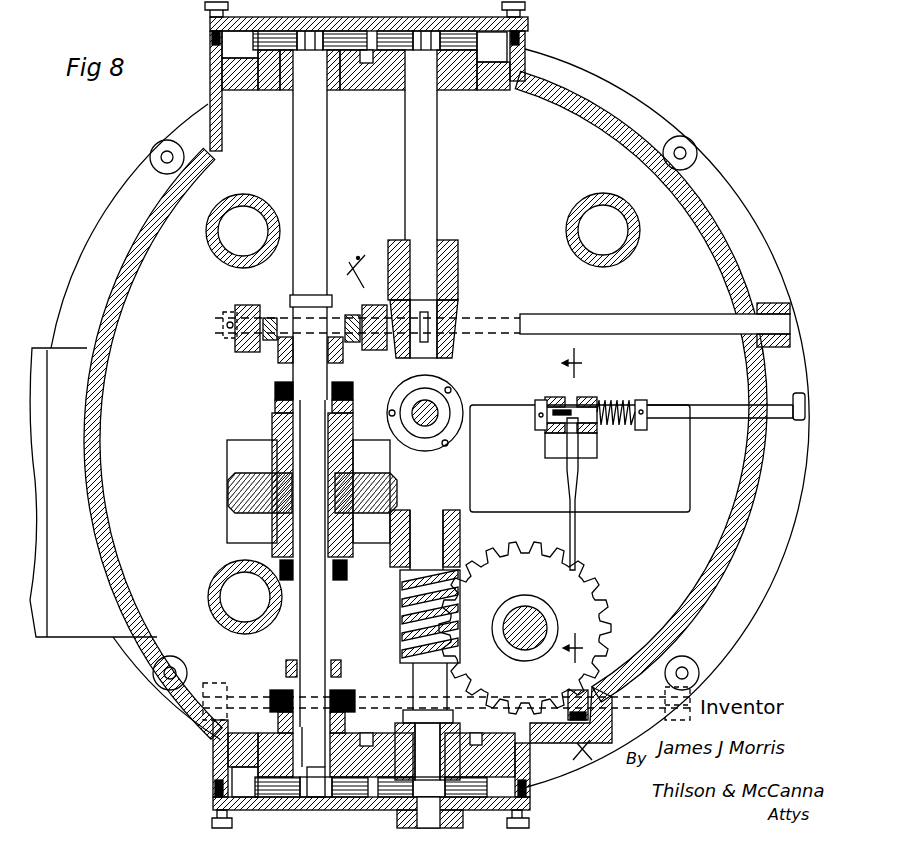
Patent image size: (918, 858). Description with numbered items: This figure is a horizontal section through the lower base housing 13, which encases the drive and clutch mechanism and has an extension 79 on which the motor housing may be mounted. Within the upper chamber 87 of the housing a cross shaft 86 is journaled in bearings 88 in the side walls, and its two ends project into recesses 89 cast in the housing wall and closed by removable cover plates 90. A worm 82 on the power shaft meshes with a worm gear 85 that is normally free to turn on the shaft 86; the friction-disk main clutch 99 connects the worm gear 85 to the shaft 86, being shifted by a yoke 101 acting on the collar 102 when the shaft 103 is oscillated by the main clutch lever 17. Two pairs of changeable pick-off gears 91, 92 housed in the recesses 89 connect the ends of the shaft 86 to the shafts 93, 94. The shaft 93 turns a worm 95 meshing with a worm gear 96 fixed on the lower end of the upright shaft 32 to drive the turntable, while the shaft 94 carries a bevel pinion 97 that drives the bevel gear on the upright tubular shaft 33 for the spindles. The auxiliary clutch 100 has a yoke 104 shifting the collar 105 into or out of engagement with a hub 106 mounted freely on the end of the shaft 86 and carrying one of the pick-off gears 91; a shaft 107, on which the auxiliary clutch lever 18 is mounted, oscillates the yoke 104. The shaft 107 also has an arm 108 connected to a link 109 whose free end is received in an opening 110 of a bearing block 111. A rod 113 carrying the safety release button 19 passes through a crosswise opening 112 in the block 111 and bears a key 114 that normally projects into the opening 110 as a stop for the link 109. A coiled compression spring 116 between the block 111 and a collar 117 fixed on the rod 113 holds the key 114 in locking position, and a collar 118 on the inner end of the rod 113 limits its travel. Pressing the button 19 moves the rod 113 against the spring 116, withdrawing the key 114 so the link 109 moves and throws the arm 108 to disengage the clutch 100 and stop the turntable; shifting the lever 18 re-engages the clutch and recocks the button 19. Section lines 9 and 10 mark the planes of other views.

The section line 9- 9 is at (475, 507).
The section line 10- 10 is at (579, 504).
The lower base housing 13 is at (721, 247).
The main clutch lever 17 is at (789, 312).
The auxiliary clutch lever 18 is at (674, 718).
The safety release button 19 is at (805, 400).
The upright shaft 32 is at (536, 612).
The upright tubular shaft 33 is at (426, 426).
The extension of the lower base housing 79 is at (88, 636).
The worm 82 is at (262, 460).
The worm gear 85 is at (245, 497).
The shaft 86 is at (328, 208).
The upper chamber 87 is at (597, 143).
The bearings 88 is at (292, 88).
The recesses 89 is at (238, 57).
The removable cover plates 90 is at (455, 30).
The pick-off gears 91 is at (345, 806).
The pick-off gears 92 is at (380, 30).
The shaft 93 is at (460, 733).
The shaft 94 is at (437, 157).
The worm 95 is at (400, 623).
The worm gear 96 is at (590, 574).
The bevel pinion 97 is at (455, 345).
The main clutch 99 is at (354, 391).
The auxiliary clutch 100 is at (285, 692).
The yoke 101 is at (278, 300).
The collar 102 is at (280, 352).
The shaft 103 is at (600, 323).
The yoke 104 is at (348, 690).
The collar 105 is at (286, 717).
The hub 106 is at (347, 726).
The shaft 107 is at (365, 700).
The arm 108 is at (586, 690).
The link 109 is at (583, 531).
The opening 110 is at (575, 397).
The bearing block 111 is at (556, 397).
The opening 112 is at (597, 427).
The rod 113 is at (735, 419).
The key 114 is at (556, 433).
The coiled compression spring 116 is at (627, 400).
The collar 117 is at (685, 404).
The collar 118 is at (535, 426).